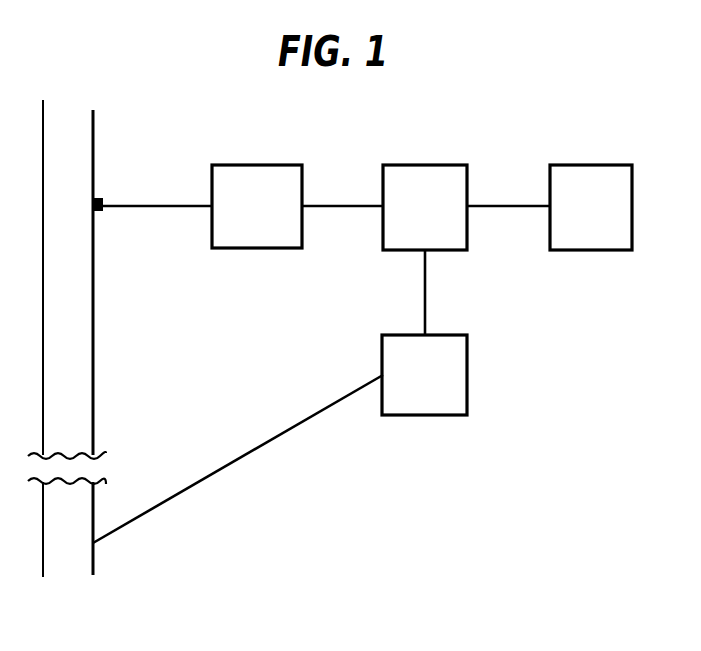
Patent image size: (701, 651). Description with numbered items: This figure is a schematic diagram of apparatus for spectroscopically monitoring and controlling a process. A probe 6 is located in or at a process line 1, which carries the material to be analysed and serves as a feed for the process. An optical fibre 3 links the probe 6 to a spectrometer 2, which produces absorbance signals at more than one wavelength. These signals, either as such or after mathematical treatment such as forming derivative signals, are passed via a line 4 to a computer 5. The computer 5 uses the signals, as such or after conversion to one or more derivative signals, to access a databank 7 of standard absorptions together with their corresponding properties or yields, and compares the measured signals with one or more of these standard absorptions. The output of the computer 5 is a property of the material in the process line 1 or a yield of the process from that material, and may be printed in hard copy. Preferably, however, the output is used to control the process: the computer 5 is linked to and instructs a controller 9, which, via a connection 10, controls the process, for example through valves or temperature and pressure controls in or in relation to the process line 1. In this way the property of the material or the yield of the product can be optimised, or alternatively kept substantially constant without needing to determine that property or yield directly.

The process line 1 is at (95, 126).
The spectrometer 2 is at (256, 165).
The optical fibre 3 is at (163, 205).
The line 4 is at (335, 205).
The computer 5 is at (427, 165).
The probe 6 is at (101, 198).
The databank 7 is at (580, 165).
The controller 9 is at (467, 366).
The control connection 10 is at (233, 463).